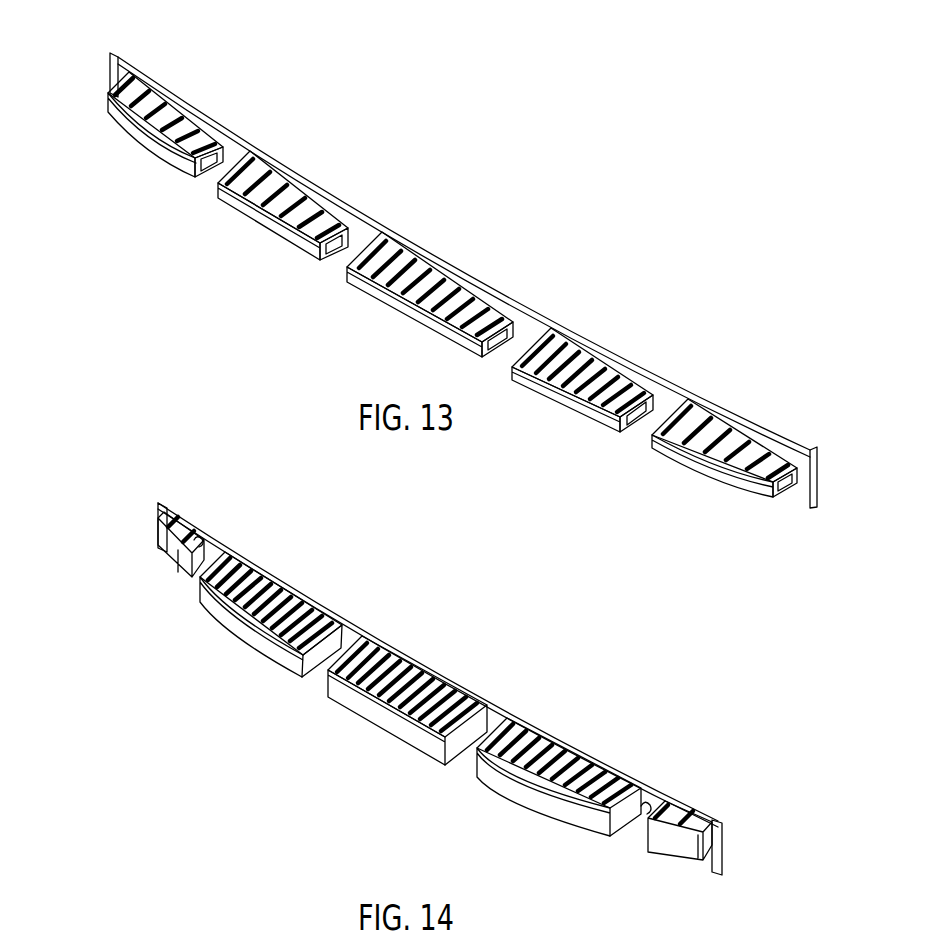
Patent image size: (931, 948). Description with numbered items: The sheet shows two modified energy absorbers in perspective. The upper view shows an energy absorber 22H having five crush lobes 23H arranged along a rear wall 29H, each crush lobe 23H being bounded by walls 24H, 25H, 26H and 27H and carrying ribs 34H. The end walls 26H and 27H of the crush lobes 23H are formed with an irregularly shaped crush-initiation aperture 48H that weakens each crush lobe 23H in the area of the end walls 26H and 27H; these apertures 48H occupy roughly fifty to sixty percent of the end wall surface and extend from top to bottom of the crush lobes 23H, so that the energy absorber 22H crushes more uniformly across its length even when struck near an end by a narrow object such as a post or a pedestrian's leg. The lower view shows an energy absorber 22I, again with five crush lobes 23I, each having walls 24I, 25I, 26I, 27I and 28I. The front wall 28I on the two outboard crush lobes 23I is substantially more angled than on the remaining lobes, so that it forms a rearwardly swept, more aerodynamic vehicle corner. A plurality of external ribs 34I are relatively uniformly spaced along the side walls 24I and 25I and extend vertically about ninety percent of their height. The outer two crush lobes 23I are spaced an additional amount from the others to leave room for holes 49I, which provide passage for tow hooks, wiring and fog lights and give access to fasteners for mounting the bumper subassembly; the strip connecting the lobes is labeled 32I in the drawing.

In FIG. 13, the energy absorber 22H is at (630, 290).
In FIG. 13, the crush lobe 23H is at (132, 137).
In FIG. 13, the wall 24H is at (155, 118).
In FIG. 13, the wall 25H is at (183, 178).
In FIG. 13, the end wall 26H is at (328, 260).
In FIG. 13, the end wall 27H is at (115, 83).
In FIG. 13, the rear wall 29H is at (301, 178).
In FIG. 13, the ribs 34H is at (420, 282).
In FIG. 13, the crush-initiation aperture 48H is at (222, 158).
In FIG. 14, the energy absorber 22I is at (602, 732).
In FIG. 14, the crush lobe 23I is at (167, 565).
In FIG. 14, the side wall 24I is at (278, 610).
In FIG. 14, the side wall 25I is at (267, 662).
In FIG. 14, the wall 26I is at (317, 665).
In FIG. 14, the wall 27I is at (157, 513).
In FIG. 14, the front wall 28I is at (352, 703).
In FIG. 14, the connecting strip 32I is at (182, 530).
In FIG. 14, the external ribs 34I is at (415, 690).
In FIG. 14, the holes 49I is at (197, 535).